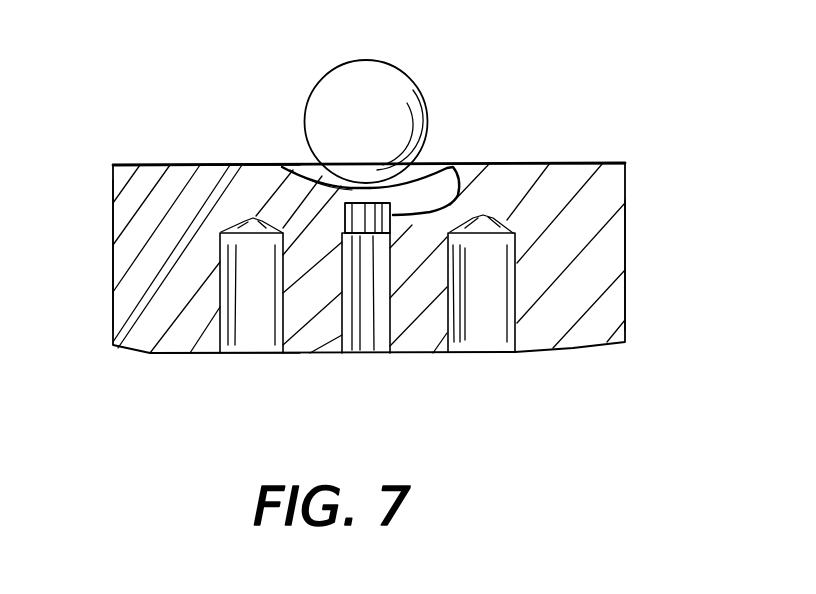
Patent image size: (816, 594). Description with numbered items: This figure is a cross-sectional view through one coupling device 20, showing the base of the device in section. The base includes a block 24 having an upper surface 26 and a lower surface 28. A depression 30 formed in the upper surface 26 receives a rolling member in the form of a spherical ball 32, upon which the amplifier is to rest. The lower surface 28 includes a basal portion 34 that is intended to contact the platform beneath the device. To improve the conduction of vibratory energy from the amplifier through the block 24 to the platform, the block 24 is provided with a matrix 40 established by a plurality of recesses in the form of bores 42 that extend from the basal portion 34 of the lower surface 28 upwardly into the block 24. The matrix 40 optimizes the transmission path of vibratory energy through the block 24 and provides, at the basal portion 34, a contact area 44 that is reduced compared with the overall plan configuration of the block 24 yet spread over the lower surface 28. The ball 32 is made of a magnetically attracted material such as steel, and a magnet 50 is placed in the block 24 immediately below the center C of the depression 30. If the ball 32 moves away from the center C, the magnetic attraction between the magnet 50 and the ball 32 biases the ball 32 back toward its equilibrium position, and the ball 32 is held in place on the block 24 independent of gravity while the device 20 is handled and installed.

The coupling device 20 is at (110, 162).
The block 24 is at (113, 225).
The upper surface 26 is at (185, 163).
The lower surface 28 is at (172, 357).
The depression 30 is at (433, 167).
The spherical ball 32 is at (368, 90).
The basal portion 34 is at (537, 355).
The matrix 40 is at (277, 343).
The bores 42 is at (237, 340).
The contact area 44 is at (292, 353).
The magnet 50 is at (483, 163).
The center of the depression C is at (369, 186).